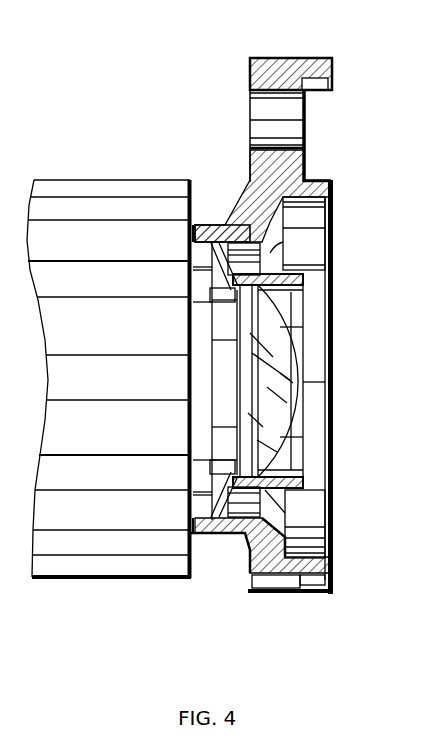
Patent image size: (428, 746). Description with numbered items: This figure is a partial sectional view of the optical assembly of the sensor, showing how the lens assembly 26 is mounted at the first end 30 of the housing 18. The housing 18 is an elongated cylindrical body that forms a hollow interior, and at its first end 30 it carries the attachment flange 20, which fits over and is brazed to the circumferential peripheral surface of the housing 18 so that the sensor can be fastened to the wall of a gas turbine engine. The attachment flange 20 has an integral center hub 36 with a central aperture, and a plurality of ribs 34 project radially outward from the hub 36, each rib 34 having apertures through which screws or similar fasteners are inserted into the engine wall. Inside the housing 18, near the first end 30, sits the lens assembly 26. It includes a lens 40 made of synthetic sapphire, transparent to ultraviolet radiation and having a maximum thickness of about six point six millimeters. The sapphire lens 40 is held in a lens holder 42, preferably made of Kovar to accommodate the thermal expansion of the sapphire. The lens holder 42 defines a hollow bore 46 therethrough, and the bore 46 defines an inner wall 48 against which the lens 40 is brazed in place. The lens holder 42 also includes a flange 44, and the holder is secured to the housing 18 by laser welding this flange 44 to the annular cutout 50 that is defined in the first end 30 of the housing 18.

The housing assembly 18 is at (127, 164).
The attachment flange 20 is at (292, 44).
The lens assembly 26 is at (312, 298).
The first end 30 is at (237, 590).
The ribs 34 is at (318, 593).
The center hub 36 is at (218, 224).
The lens 40 is at (292, 367).
The lens holder 42 is at (295, 460).
The flange 44 is at (244, 532).
The hollow bore 46 is at (293, 450).
The inner wall 48 is at (290, 288).
The annular cutout 50 is at (257, 517).